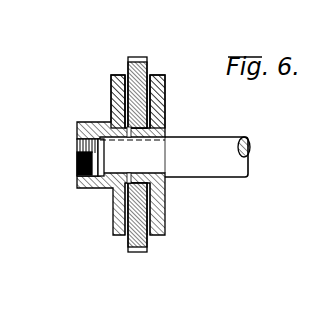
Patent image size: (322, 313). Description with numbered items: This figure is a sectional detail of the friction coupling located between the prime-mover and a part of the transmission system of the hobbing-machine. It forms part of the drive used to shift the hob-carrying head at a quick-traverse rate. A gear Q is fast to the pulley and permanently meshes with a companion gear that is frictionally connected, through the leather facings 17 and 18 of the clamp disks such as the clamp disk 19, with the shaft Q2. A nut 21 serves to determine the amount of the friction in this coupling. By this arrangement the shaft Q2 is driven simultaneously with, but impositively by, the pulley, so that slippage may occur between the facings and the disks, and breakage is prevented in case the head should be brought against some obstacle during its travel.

The gear Q is at (142, 56).
The leather facing 17 is at (149, 76).
The leather facing 18 is at (123, 75).
The clamp disk 19 is at (163, 104).
The nut 21 is at (87, 121).
The shaft Q2 is at (175, 157).